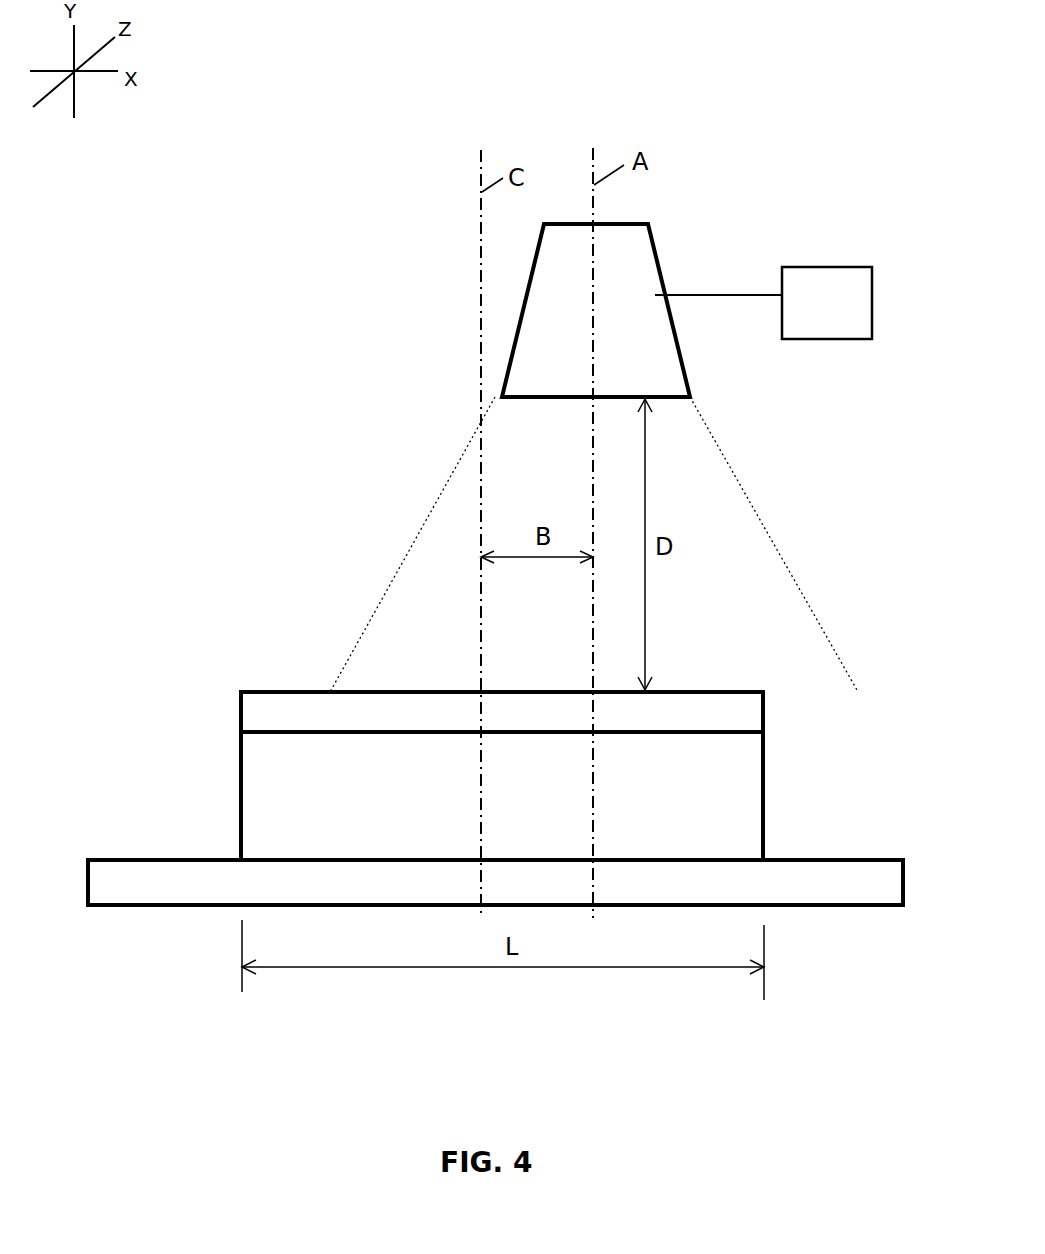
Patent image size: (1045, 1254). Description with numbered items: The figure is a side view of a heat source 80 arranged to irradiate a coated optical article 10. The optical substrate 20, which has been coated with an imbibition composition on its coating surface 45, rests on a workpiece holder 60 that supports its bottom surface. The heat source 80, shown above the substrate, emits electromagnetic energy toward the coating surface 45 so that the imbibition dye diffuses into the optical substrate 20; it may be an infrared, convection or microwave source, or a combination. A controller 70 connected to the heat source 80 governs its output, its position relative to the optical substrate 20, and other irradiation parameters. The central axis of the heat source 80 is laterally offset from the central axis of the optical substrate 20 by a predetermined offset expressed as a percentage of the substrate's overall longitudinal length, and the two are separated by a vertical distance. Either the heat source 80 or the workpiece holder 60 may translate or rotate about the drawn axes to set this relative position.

The optical article 10 is at (842, 699).
The optical substrate 20 is at (742, 795).
The coating surface 45 is at (745, 735).
The workpiece holder 60 is at (826, 886).
The controller 70 is at (858, 293).
The heat source 80 is at (637, 253).